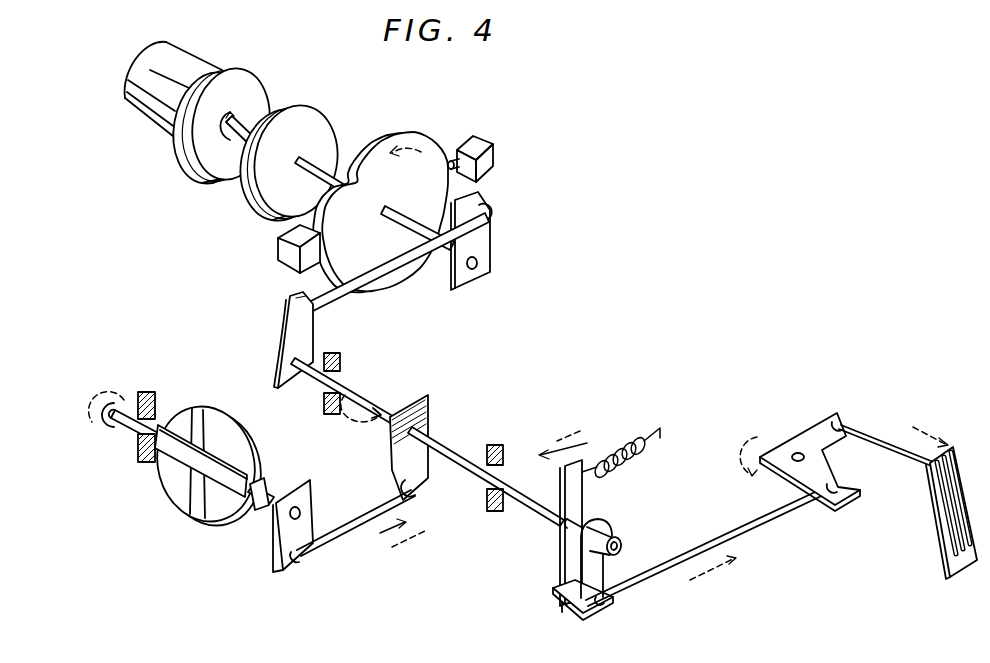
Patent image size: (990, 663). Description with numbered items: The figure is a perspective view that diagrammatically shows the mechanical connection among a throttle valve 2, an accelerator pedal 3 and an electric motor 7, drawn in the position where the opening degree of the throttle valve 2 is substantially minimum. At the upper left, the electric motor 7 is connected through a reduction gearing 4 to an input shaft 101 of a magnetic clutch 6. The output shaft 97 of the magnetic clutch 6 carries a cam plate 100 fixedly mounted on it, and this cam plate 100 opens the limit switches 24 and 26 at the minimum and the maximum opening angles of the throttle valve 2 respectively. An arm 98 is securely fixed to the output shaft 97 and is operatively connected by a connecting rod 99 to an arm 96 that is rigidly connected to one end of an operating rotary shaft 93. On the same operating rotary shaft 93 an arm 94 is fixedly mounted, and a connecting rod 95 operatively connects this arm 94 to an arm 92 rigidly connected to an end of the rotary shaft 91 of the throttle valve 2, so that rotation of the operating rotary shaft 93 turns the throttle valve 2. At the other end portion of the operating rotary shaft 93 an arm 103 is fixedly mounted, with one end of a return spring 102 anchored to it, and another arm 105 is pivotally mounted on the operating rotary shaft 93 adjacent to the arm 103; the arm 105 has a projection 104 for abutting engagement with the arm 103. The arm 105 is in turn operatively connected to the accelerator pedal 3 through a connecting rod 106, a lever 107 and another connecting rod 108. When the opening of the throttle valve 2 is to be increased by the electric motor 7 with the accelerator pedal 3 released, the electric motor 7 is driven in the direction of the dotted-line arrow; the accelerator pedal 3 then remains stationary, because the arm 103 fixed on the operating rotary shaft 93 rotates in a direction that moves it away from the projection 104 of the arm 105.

The electric motor 7 is at (164, 46).
The reduction gearing 4 is at (248, 78).
The input shaft 101 is at (261, 110).
The magnetic clutch 6 is at (311, 113).
The output shaft 97 is at (347, 190).
The cam plate 100 is at (404, 132).
The limit switch 26 is at (493, 136).
The limit switch 24 is at (280, 252).
The arm 98 is at (492, 233).
The connecting rod 99 is at (416, 262).
The arm 96 is at (278, 337).
The arm 94 is at (389, 440).
The operating rotary shaft 93 is at (452, 440).
The throttle valve 2 is at (178, 497).
The rotary shaft 91 is at (264, 490).
The arm 92 is at (272, 553).
The connecting rod 95 is at (343, 537).
The arm 103 is at (558, 527).
The projection 104 is at (550, 608).
The arm 105 is at (604, 573).
The connecting rod 106 is at (654, 580).
The return spring 102 is at (640, 463).
The lever 107 is at (792, 440).
The connecting rod 108 is at (887, 443).
The accelerator pedal 3 is at (937, 513).